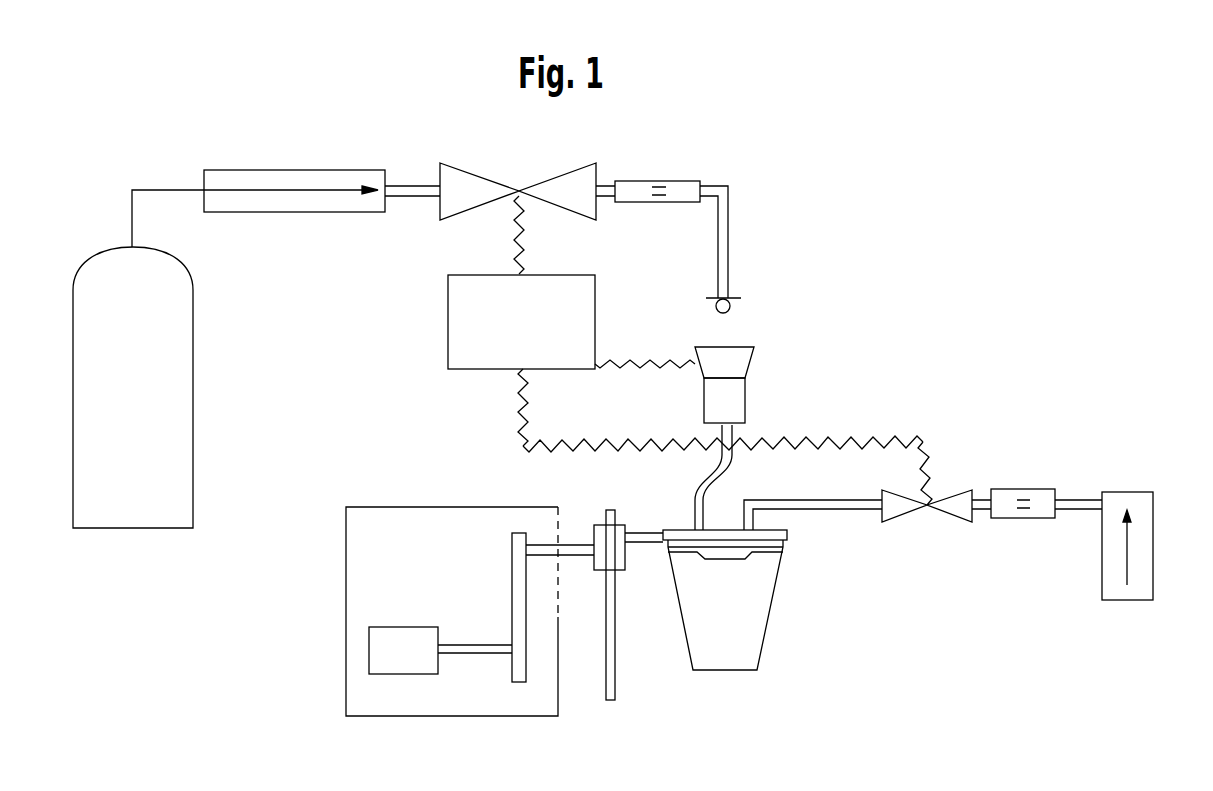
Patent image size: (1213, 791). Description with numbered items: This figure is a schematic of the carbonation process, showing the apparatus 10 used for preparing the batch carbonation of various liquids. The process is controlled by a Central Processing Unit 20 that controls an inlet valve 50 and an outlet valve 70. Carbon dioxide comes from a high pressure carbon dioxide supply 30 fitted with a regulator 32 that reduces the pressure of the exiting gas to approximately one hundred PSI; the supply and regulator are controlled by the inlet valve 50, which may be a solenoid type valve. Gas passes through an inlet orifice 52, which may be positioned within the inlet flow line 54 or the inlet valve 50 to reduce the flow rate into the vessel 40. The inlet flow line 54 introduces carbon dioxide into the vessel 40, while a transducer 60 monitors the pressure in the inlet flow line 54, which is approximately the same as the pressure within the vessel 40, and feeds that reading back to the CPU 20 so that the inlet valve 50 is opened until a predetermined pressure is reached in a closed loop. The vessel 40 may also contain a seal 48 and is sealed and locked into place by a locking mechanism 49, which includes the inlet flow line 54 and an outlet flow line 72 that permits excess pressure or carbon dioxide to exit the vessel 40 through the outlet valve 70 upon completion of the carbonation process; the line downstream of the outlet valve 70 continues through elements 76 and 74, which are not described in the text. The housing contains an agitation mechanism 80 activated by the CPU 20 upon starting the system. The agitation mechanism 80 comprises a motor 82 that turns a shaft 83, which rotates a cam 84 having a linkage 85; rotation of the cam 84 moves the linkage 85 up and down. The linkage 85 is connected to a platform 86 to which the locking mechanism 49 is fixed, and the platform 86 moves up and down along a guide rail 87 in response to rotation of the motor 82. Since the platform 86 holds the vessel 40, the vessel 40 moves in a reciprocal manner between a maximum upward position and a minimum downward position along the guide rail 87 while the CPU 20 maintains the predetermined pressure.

The apparatus 10 is at (867, 236).
The Central Processing Unit 20 is at (442, 330).
The high pressure carbon dioxide supply 30 is at (153, 535).
The regulator 32 is at (272, 167).
The vessel 40 is at (750, 613).
The seal 48 is at (770, 556).
The locking mechanism 49 is at (783, 535).
The inlet valve 50 is at (514, 184).
The inlet orifice 52 is at (704, 180).
The inlet flow line 54 is at (731, 256).
The transducer 60 is at (751, 392).
The outlet valve 70 is at (938, 487).
The outlet flow line 72 is at (776, 500).
The vent 74 is at (1136, 545).
The flow meter 76 is at (1025, 520).
The agitation mechanism 80 is at (445, 605).
The motor 82 is at (384, 625).
The shaft 83 is at (478, 659).
The cam 84 is at (509, 545).
The linkage 85 is at (537, 539).
The platform 86 is at (598, 573).
The guide rail 87 is at (617, 695).